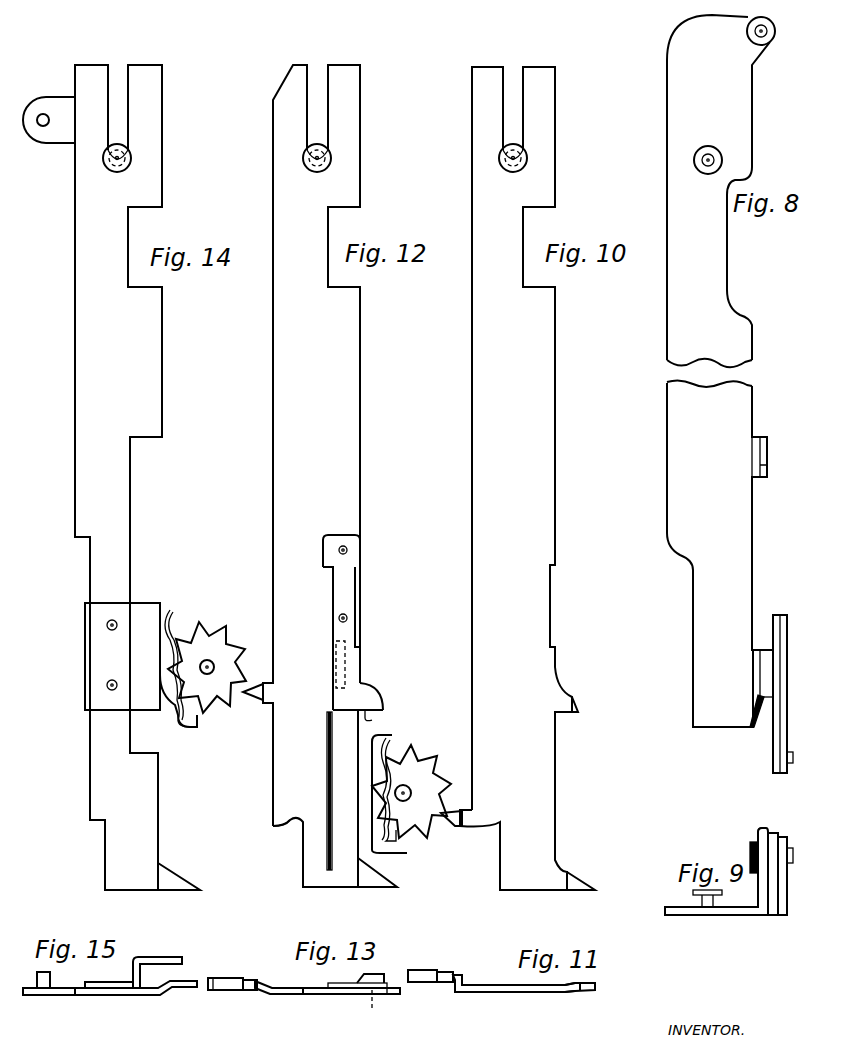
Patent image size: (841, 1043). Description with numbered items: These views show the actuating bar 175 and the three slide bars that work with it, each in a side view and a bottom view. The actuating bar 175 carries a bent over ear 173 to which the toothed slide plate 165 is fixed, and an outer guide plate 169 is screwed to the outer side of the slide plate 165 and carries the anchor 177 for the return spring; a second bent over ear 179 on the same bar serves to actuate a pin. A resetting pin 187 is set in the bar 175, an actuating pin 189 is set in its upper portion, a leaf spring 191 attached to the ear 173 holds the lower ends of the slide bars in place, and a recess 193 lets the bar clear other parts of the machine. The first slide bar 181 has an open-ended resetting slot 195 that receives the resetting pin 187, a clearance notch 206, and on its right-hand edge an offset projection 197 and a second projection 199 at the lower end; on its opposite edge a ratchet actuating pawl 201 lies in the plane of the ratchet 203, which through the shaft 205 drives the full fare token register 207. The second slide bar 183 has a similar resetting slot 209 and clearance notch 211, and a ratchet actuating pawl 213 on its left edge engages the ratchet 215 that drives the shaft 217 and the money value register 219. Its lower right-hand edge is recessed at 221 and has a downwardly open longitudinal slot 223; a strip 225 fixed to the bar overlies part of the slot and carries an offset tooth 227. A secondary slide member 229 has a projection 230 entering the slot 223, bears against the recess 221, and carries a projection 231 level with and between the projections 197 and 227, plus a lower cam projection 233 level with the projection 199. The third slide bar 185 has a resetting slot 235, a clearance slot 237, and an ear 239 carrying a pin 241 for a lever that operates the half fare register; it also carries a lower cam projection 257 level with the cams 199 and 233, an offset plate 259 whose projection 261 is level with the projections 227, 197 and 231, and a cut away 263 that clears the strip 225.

In FIG. 8, the slide plate 165 is at (770, 615).
In FIG. 9, the slide plate 165 is at (775, 915).
In FIG. 8, the outer guide plate 169 is at (780, 773).
In FIG. 9, the outer guide plate 169 is at (784, 918).
In FIG. 8, the bent over ear 173 is at (767, 668).
In FIG. 9, the bent over ear 173 is at (763, 830).
In FIG. 8, the actuating bar 175 is at (683, 482).
In FIG. 9, the actuating bar 175 is at (700, 913).
In FIG. 9, the anchor 177 is at (795, 772).
In FIG. 8, the second bent over ear 179 is at (758, 455).
In FIG. 10, the first slide bar 181 is at (553, 432).
In FIG. 11, the first slide bar 181 is at (476, 985).
In FIG. 12, the second slide bar 183 is at (353, 432).
In FIG. 14, the third slide bar 185 is at (148, 390).
In FIG. 8, the resetting pin 187 is at (708, 172).
In FIG. 9, the resetting pin 187 is at (693, 893).
In FIG. 8, the actuating pin 189 is at (752, 44).
In FIG. 8, the leaf spring 191 is at (762, 722).
In FIG. 9, the leaf spring 191 is at (752, 842).
In FIG. 8, the recess 193 is at (728, 263).
In FIG. 10, the resetting slot 195 is at (518, 132).
In FIG. 10, the projection 197 is at (576, 700).
In FIG. 11, the projection 197 is at (575, 982).
In FIG. 10, the second projection 199 is at (572, 878).
In FIG. 11, the second projection 199 is at (597, 986).
In FIG. 12, the ratchet actuating pawl 201 is at (447, 832).
In FIG. 11, the ratchet actuating pawl 201 is at (455, 978).
In FIG. 12, the ratchet 203 is at (425, 768).
In FIG. 11, the ratchet 203 is at (437, 970).
In FIG. 12, the shaft 205 is at (405, 802).
In FIG. 10, the clearance notch 206 is at (535, 212).
In FIG. 12, the full fare token register 207 is at (388, 748).
In FIG. 12, the resetting slot 209 is at (327, 119).
In FIG. 12, the clearance notch 211 is at (338, 215).
In FIG. 14, the ratchet actuating pawl 213 is at (255, 702).
In FIG. 13, the ratchet actuating pawl 213 is at (245, 990).
In FIG. 14, the ratchet 215 is at (221, 636).
In FIG. 13, the ratchet 215 is at (230, 980).
In FIG. 14, the shaft 217 is at (208, 666).
In FIG. 14, the money value register 219 is at (170, 610).
In FIG. 12, the recess 221 is at (315, 840).
In FIG. 12, the longitudinal slot 223 is at (336, 650).
In FIG. 12, the strip 225 is at (347, 598).
In FIG. 13, the strip 225 is at (338, 981).
In FIG. 12, the projection or tooth 227 is at (368, 700).
In FIG. 13, the projection or tooth 227 is at (370, 974).
In FIG. 12, the secondary slide member 229 is at (340, 758).
In FIG. 13, the secondary slide member 229 is at (342, 992).
In FIG. 12, the projection 230 is at (338, 672).
In FIG. 12, the projection 231 is at (372, 722).
In FIG. 13, the projection 231 is at (372, 1010).
In FIG. 12, the cam projection 233 is at (372, 882).
In FIG. 13, the cam projection 233 is at (382, 994).
In FIG. 14, the resetting slot 235 is at (127, 119).
In FIG. 14, the clearance slot 237 is at (138, 208).
In FIG. 14, the ear 239 is at (33, 103).
In FIG. 14, the pin 241 is at (49, 122).
In FIG. 15, the pin 241 is at (23, 988).
In FIG. 14, the cam projection 257 is at (172, 880).
In FIG. 15, the cam projection 257 is at (165, 992).
In FIG. 14, the offset plate 259 is at (97, 662).
In FIG. 15, the offset plate 259 is at (133, 965).
In FIG. 14, the projection 261 is at (175, 730).
In FIG. 15, the projection 261 is at (182, 957).
In FIG. 14, the cut away 263 is at (128, 562).